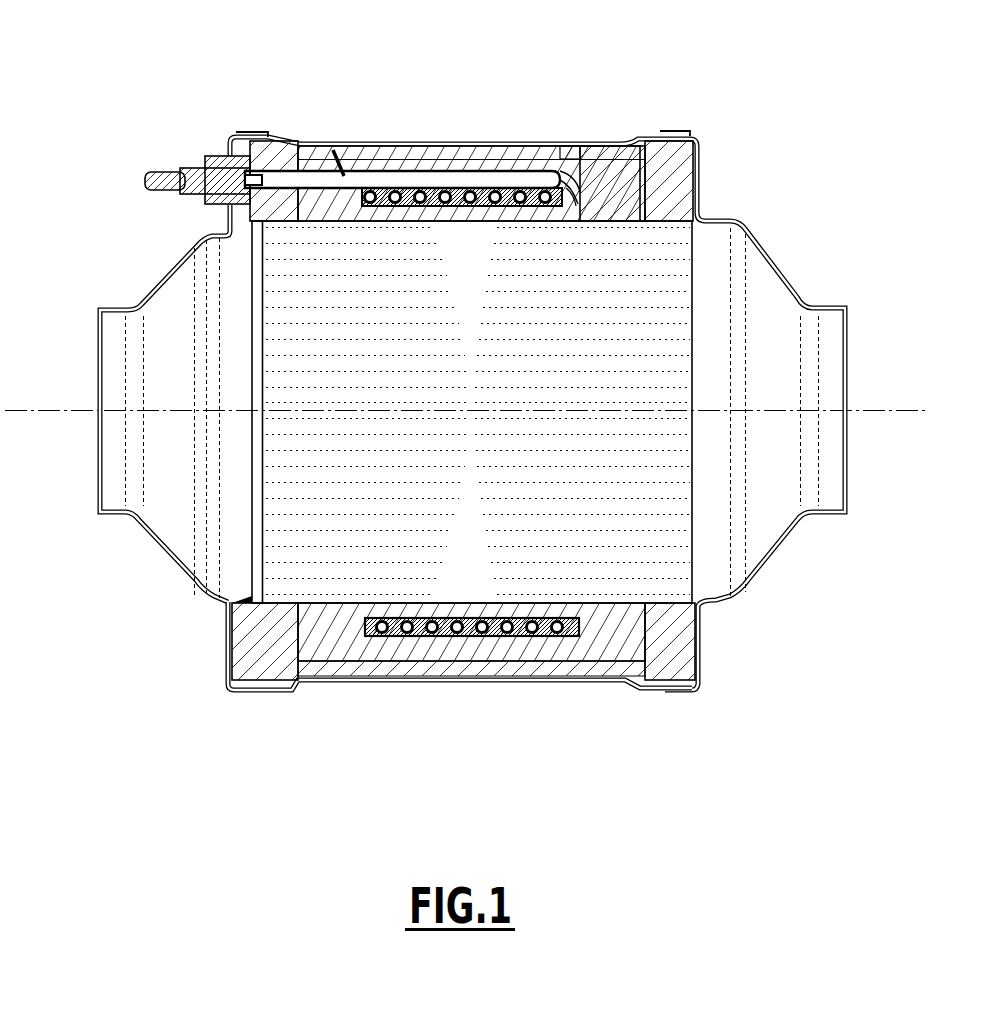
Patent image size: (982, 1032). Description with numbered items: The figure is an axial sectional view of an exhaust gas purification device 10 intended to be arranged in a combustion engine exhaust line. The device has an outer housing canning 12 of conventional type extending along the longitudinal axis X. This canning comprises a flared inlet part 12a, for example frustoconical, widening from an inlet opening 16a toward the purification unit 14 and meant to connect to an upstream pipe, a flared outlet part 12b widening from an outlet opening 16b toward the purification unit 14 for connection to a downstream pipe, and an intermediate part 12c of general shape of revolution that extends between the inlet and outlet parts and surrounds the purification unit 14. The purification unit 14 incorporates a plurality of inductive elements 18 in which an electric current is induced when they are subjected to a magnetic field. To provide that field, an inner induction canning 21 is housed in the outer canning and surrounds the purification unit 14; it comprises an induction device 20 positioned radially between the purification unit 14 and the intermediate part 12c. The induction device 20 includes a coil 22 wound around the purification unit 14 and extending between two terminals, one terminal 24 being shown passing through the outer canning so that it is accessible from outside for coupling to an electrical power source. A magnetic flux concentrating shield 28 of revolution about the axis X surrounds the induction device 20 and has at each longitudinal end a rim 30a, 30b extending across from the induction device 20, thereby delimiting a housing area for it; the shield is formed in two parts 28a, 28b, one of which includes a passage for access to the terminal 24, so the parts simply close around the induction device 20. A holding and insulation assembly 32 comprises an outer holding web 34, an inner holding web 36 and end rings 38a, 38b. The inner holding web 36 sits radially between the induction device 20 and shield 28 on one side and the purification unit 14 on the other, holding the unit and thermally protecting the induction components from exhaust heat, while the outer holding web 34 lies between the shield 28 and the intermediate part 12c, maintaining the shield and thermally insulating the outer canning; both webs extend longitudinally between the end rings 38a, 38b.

The exhaust gas purification device 10 is at (90, 126).
The outer housing canning 12 is at (715, 136).
The flared inlet part 12a is at (168, 278).
The flared outlet part 12b is at (776, 276).
The intermediate part 12c is at (407, 144).
The purification unit 14 is at (226, 599).
The inlet opening 16a is at (76, 446).
The outlet opening 16b is at (862, 462).
The inductive element 18 is at (605, 580).
The induction device 20 is at (330, 144).
The inner induction canning 21 is at (606, 160).
The coil 22 is at (378, 150).
The terminal 24 is at (203, 171).
The magnetic flux concentrating shield 28 is at (508, 135).
The first part of the magnetic flux concentrating shield 28a is at (386, 640).
The second part of the magnetic flux concentrating shield 28b is at (520, 643).
The rim 30a is at (347, 645).
The rim 30b is at (647, 640).
The holding and insulation assembly 32 is at (594, 135).
The outer holding web 34 is at (469, 160).
The inner holding web 36 is at (471, 606).
The end ring 38a is at (273, 146).
The end ring 38b is at (676, 172).
The longitudinal axis X is at (905, 410).